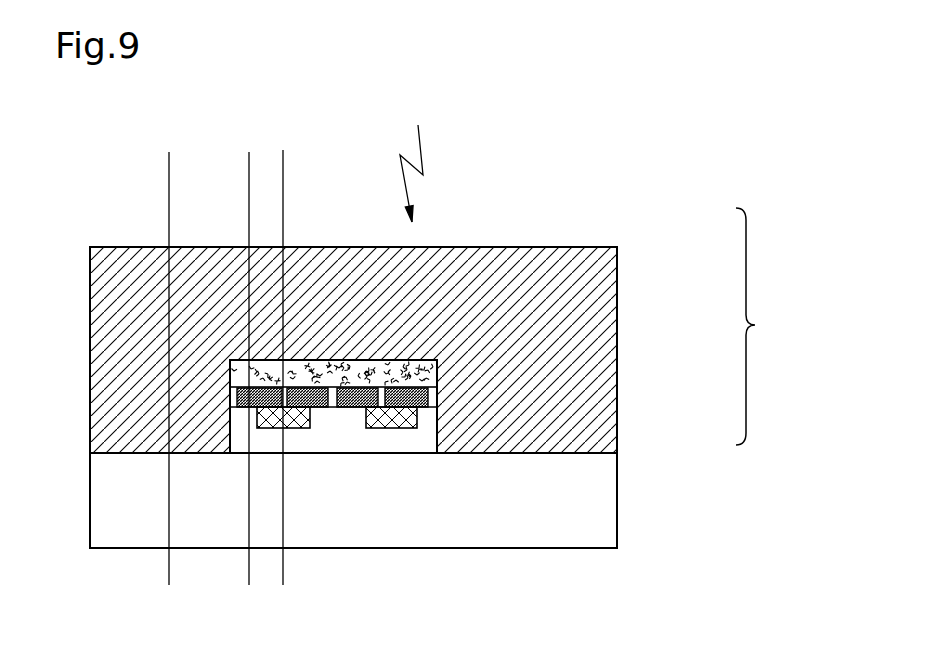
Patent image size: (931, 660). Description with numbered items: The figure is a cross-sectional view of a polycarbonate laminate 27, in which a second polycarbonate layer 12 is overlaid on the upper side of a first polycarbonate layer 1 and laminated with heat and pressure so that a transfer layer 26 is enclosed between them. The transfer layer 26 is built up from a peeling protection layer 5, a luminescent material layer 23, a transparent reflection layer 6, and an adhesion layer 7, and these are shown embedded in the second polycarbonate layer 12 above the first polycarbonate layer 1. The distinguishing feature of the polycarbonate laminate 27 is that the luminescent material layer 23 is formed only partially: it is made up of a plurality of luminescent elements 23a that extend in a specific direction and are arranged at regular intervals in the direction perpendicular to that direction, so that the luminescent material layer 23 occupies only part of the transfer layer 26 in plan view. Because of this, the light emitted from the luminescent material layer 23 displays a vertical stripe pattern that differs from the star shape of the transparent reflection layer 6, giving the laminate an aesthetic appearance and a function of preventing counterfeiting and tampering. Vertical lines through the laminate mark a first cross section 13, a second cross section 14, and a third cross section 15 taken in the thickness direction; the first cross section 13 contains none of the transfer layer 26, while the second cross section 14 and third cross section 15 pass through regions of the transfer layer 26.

The first polycarbonate layer 1 is at (617, 523).
The peeling protection layer 5 is at (437, 363).
The transparent reflection layer 6 is at (437, 398).
The adhesion layer 7 is at (437, 420).
The second polycarbonate layer 12 is at (560, 247).
The first cross section 13 is at (173, 373).
The second cross section 14 is at (257, 373).
The third cross section 15 is at (308, 378).
The luminescent material layer 23 is at (437, 388).
The luminescent elements 23a is at (375, 360).
The transfer layer 26 is at (776, 326).
The polycarbonate laminate 27 is at (412, 152).